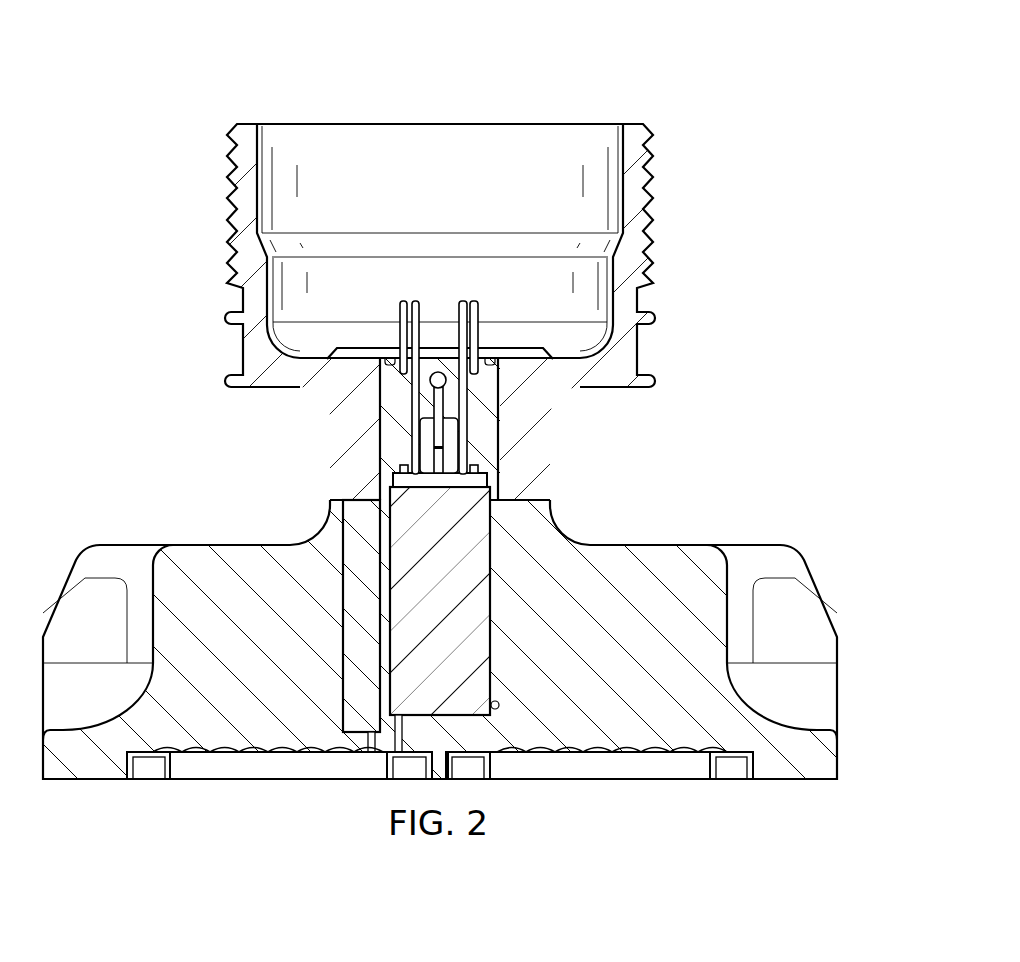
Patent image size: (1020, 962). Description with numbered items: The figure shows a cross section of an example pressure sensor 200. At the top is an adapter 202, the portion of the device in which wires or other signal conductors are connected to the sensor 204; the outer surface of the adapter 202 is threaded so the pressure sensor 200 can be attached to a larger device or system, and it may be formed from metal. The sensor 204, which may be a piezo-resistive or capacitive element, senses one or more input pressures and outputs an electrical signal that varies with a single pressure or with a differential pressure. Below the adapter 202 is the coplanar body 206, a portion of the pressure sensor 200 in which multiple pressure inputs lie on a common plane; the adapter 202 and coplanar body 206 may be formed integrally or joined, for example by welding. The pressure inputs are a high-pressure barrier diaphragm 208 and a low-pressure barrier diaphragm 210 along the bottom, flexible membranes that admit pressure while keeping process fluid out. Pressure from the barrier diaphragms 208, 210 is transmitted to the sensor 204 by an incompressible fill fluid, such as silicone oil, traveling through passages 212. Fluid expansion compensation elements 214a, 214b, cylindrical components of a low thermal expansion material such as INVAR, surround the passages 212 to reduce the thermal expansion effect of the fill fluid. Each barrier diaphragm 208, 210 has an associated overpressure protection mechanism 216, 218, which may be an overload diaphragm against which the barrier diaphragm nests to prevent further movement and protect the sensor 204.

The pressure sensor 200 is at (556, 62).
The adapter 202 is at (176, 176).
The sensor 204 is at (425, 440).
The coplanar body 206 is at (222, 518).
The high-pressure barrier diaphragm 208 is at (279, 773).
The low-pressure barrier diaphragm 210 is at (599, 773).
The passages 212 is at (402, 728).
The fluid expansion compensation element 214a is at (346, 618).
The fluid expansion compensation element 214b is at (488, 605).
The overpressure protection mechanism 216 is at (212, 736).
The overpressure protection mechanism 218 is at (654, 736).